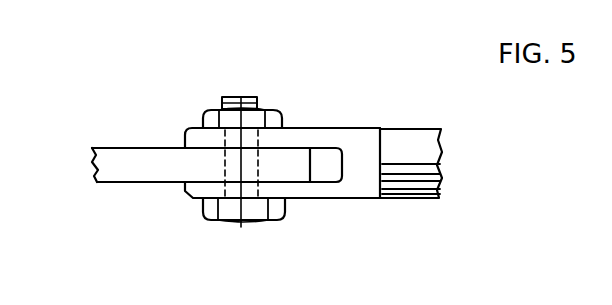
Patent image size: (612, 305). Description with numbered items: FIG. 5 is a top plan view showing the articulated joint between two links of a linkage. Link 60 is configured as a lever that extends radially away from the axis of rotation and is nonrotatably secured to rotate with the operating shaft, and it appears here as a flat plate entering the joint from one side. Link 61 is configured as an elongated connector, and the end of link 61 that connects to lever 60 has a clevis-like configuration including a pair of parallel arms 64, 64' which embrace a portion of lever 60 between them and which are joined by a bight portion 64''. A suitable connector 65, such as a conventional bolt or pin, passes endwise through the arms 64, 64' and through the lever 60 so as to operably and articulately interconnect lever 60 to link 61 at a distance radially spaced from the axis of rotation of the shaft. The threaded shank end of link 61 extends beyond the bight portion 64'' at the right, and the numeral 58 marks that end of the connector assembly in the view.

The bolt 58 is at (421, 126).
The link 60 is at (126, 160).
The link 61 is at (432, 148).
The arm 64 is at (280, 99).
The arm 64' is at (267, 241).
The bight portion 64'' is at (323, 127).
The connector 65 is at (274, 212).